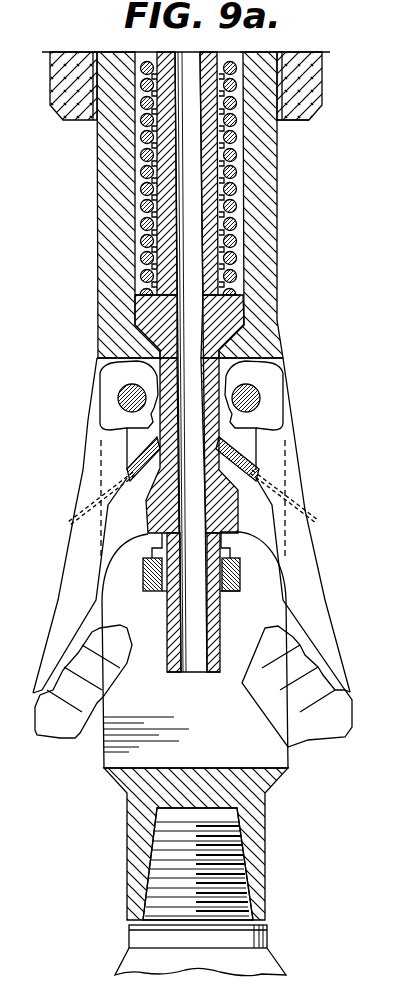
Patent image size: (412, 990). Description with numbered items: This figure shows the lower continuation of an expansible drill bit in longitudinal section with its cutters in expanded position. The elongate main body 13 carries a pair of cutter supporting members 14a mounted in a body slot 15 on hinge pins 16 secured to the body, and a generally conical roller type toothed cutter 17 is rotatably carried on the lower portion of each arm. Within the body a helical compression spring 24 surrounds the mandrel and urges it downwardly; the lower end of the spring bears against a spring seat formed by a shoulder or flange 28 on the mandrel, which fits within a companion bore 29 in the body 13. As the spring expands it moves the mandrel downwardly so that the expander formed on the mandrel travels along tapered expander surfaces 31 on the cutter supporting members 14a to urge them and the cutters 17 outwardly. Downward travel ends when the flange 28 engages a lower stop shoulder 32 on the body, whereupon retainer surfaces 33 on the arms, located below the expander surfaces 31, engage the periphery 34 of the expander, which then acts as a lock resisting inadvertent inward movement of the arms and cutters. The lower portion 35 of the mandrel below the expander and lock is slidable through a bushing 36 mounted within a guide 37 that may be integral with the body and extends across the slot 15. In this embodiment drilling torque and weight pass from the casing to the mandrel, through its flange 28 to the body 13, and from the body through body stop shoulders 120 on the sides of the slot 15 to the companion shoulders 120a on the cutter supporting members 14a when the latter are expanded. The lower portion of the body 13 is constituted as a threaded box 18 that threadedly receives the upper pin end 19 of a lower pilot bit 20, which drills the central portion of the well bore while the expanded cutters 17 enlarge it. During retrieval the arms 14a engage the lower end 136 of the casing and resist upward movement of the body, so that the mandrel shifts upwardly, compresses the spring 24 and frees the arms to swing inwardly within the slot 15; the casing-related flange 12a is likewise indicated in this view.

The flange 12a is at (318, 88).
The lower end of the casing 136 is at (278, 121).
The main body 13 is at (100, 190).
The helical compression spring 24 is at (232, 198).
The companion bore 29 is at (236, 234).
The shoulder or flange 28 is at (236, 316).
The lower stop shoulder 32 is at (226, 343).
The hinge pins 16 is at (258, 396).
The body stop shoulders 120 is at (133, 468).
The companion shoulders 120a is at (297, 512).
The cutter supporting members 14a is at (70, 573).
The tapered expander surfaces 31 is at (125, 559).
The retainer surfaces 33 is at (240, 510).
The guide 37 is at (143, 582).
The periphery of the expander 34 is at (243, 562).
The bushing 36 is at (168, 612).
The lower portion of the mandrel 35 is at (220, 612).
The toothed cutter 17 is at (62, 736).
The body slot 15 is at (272, 754).
The threaded box 18 is at (263, 843).
The upper pin end 19 is at (243, 889).
The lower pilot bit 20 is at (278, 968).